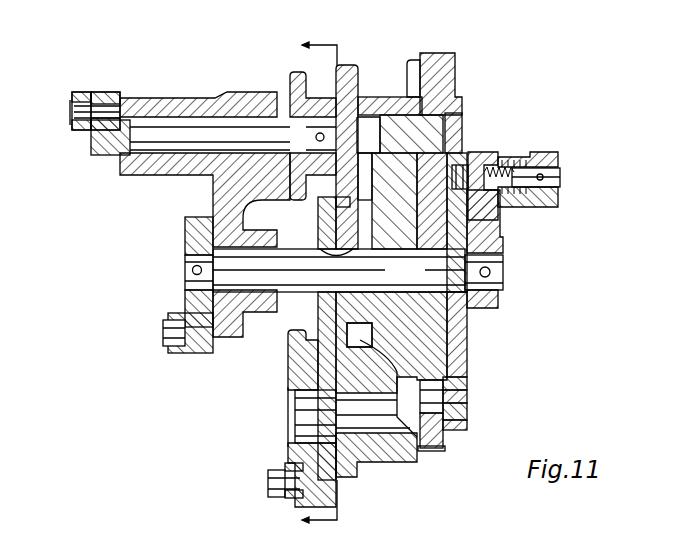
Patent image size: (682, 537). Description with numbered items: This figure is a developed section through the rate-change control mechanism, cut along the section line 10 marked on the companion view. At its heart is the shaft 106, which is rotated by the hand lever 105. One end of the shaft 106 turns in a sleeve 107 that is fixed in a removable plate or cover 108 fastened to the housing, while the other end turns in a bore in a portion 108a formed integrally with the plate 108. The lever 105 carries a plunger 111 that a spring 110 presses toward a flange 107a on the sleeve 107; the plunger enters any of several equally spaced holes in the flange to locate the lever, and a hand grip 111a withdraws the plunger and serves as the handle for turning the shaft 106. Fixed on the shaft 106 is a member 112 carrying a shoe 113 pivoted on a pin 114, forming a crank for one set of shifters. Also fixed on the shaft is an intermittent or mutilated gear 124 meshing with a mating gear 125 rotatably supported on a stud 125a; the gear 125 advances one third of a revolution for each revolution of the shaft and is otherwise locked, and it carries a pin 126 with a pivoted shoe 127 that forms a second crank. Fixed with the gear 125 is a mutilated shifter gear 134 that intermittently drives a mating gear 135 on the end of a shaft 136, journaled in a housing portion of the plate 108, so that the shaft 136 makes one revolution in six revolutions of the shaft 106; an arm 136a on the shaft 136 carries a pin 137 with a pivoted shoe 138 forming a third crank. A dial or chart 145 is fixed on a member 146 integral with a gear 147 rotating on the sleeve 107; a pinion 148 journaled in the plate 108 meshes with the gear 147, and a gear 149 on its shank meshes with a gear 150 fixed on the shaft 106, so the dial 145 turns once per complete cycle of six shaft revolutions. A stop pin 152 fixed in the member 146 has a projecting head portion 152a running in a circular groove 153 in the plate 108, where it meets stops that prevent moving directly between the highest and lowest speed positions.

The section line 10 is at (330, 286).
The hand lever 105 is at (500, 230).
The shaft 106 is at (503, 270).
The sleeve 107 is at (339, 270).
The flange 107a is at (462, 340).
The removable plate or cover 108 is at (447, 78).
The portion integrally formed with the plate 108a is at (238, 187).
The spring 110 is at (485, 154).
The plunger 111 is at (560, 177).
The hand grip 111a is at (553, 155).
The member 112 is at (186, 235).
The shoe 113 is at (180, 318).
The pin 114 is at (163, 333).
The intermittent or mutilated gear 124 is at (322, 303).
The mating gear 125 is at (338, 470).
The stud 125a is at (305, 420).
The pin 126 is at (268, 486).
The shoe 127 is at (285, 498).
The intermittent or mutilated shifter gear 134 is at (292, 362).
The mating gear 135 is at (290, 80).
The shaft 136 is at (190, 92).
The arm 136a is at (108, 92).
The pin 137 is at (72, 115).
The shoe 138 is at (88, 81).
The dial or chart 145 is at (463, 418).
The member 146 is at (465, 430).
The gear 147 is at (465, 388).
The pinion 148 is at (408, 100).
The gear 149 is at (358, 80).
The gear 150 is at (330, 352).
The stop member or pin 152 is at (462, 403).
The projecting head portion 152a is at (432, 447).
The circular groove 153 is at (425, 451).